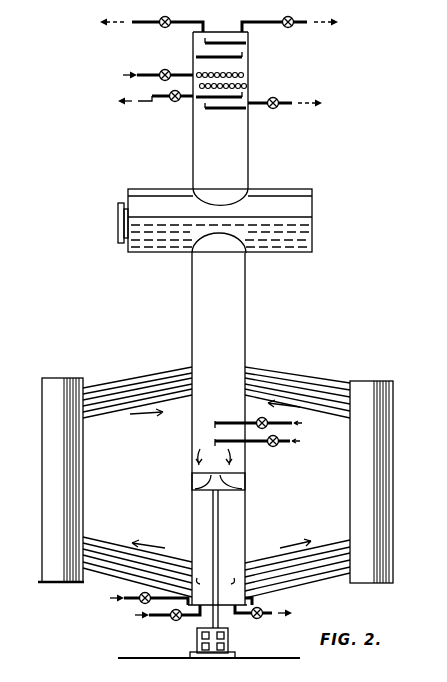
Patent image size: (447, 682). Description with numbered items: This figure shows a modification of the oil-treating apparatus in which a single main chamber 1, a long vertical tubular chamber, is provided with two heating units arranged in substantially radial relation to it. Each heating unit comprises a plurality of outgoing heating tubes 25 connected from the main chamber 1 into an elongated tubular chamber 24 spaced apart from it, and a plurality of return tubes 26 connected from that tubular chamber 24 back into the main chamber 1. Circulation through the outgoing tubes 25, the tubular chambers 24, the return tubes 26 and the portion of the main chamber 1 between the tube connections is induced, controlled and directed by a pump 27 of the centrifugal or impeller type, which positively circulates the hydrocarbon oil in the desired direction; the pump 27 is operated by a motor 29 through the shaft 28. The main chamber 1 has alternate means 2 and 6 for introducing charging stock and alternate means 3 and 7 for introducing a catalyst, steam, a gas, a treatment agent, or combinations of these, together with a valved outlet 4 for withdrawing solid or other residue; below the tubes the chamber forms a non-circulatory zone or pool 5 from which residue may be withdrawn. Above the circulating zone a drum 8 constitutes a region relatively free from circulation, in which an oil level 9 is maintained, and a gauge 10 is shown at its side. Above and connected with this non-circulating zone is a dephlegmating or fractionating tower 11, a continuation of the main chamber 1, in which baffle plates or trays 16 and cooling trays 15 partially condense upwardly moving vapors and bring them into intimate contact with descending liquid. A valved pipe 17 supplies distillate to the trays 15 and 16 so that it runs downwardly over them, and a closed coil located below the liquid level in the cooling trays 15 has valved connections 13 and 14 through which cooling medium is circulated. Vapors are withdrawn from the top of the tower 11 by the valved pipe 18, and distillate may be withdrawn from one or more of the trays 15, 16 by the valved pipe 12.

The main chamber 1 is at (248, 313).
The means for the introduction of charging stock 2 is at (143, 607).
The means for the introduction of a catalyst, steam, gas or treatment agent 3 is at (174, 621).
The valved outlet 4 is at (267, 608).
The non-circulatory zone or pool 5 is at (258, 598).
The means for the introduction of charging stock 6 is at (290, 427).
The means for the introduction of a catalyst, steam, gas or treatment agent 7 is at (285, 444).
The drum 8 is at (293, 189).
The oil level 9 is at (300, 220).
The gauge 10 is at (118, 226).
The dephlegmating or fractionating tower 11 is at (249, 147).
The valved pipe 12 is at (284, 105).
The valved connection 13 is at (169, 71).
The valved connection 14 is at (172, 103).
The cooling trays 15 is at (240, 83).
The baffle plates or trays 16 is at (238, 43).
The valved pipe 17 is at (162, 28).
The valved pipe 18 is at (292, 27).
The elongated tubular chamber 24 is at (42, 513).
The outgoing heating tubes 25 is at (117, 580).
The return tubes 26 is at (155, 372).
The pump 27 is at (222, 494).
The shaft 28 is at (197, 628).
The motor 29 is at (234, 652).